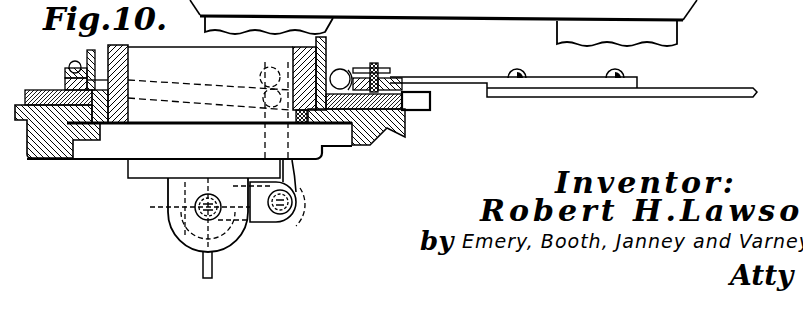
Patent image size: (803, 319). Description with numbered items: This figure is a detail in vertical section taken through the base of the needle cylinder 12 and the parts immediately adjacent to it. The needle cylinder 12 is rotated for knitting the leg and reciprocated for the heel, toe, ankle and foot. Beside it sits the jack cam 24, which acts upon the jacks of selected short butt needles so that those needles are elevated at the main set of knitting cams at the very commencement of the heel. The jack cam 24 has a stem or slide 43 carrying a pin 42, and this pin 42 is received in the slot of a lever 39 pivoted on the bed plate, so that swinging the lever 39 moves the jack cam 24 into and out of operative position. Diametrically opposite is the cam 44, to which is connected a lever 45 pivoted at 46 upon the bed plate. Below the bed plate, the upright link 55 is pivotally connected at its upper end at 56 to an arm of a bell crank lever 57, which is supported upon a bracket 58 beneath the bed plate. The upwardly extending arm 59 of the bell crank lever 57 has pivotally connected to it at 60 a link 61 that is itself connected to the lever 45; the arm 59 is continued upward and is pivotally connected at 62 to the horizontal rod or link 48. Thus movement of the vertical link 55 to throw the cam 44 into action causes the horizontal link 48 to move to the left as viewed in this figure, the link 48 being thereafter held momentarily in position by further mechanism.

The needle cylinder 12 is at (128, 77).
The jack cam 24 is at (326, 52).
The lever 39 is at (392, 72).
The pin 42 is at (376, 65).
The stem or slide 43 is at (345, 70).
The cam 44 is at (65, 69).
The lever 45 is at (65, 80).
The pivot 46 is at (74, 61).
The horizontal link 48 is at (458, 82).
The upright link 55 is at (203, 262).
The pivotal connection 56 is at (168, 207).
The bell crank lever 57 is at (292, 216).
The bracket 58 is at (262, 225).
The upwardly extending arm 59 is at (265, 140).
The pivotal connection 60 is at (263, 88).
The link 61 is at (162, 84).
The pivotal connection 62 is at (282, 68).